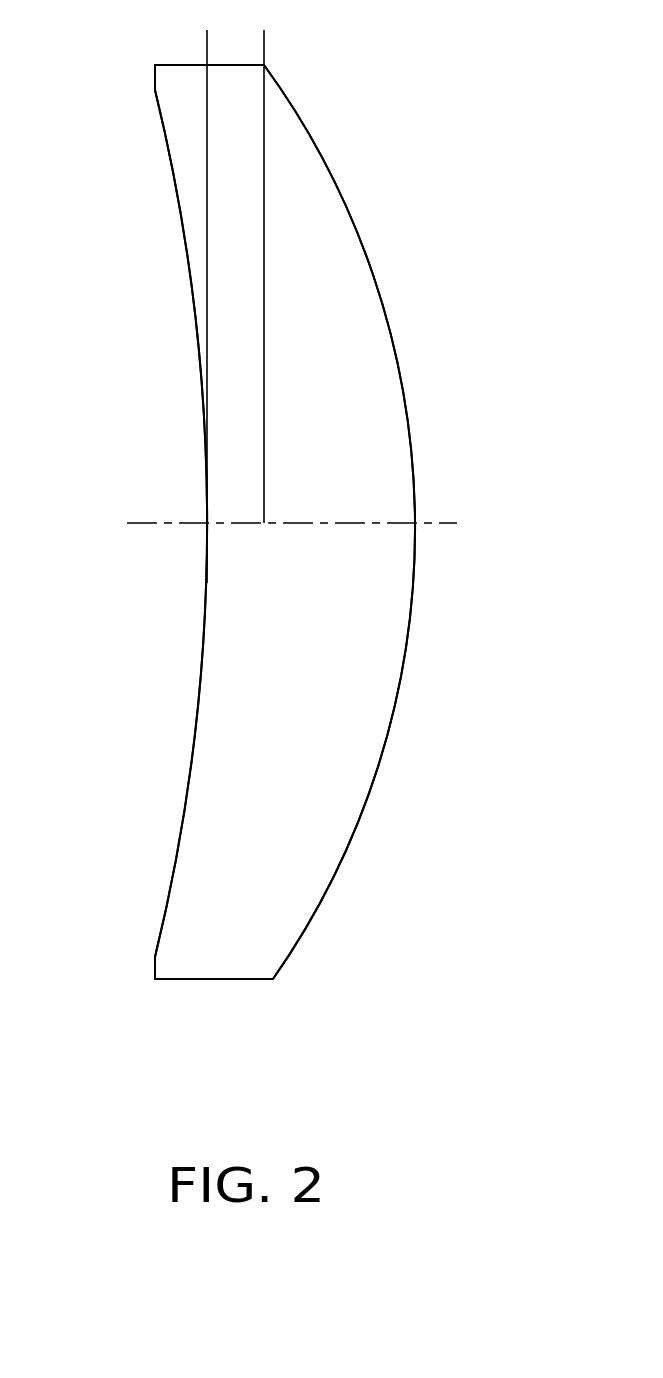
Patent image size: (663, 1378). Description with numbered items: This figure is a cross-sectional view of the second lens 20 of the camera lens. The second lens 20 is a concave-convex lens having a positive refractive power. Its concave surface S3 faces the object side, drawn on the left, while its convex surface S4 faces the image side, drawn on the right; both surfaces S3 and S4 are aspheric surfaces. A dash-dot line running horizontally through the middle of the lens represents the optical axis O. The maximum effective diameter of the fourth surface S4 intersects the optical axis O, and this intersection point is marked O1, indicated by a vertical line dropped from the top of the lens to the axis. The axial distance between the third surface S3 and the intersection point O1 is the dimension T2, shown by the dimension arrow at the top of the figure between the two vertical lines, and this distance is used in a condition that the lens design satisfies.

The second lens 20 is at (396, 360).
The concave surface S3 is at (187, 253).
The convex surface S4 is at (342, 197).
The optical axis O is at (278, 523).
The intersection point O1 is at (264, 523).
The axial distance T2 is at (264, 41).